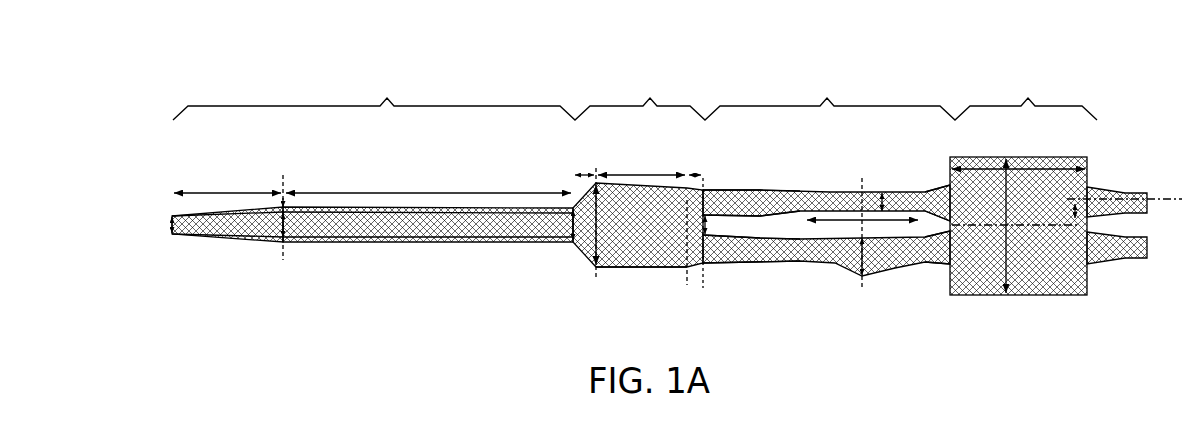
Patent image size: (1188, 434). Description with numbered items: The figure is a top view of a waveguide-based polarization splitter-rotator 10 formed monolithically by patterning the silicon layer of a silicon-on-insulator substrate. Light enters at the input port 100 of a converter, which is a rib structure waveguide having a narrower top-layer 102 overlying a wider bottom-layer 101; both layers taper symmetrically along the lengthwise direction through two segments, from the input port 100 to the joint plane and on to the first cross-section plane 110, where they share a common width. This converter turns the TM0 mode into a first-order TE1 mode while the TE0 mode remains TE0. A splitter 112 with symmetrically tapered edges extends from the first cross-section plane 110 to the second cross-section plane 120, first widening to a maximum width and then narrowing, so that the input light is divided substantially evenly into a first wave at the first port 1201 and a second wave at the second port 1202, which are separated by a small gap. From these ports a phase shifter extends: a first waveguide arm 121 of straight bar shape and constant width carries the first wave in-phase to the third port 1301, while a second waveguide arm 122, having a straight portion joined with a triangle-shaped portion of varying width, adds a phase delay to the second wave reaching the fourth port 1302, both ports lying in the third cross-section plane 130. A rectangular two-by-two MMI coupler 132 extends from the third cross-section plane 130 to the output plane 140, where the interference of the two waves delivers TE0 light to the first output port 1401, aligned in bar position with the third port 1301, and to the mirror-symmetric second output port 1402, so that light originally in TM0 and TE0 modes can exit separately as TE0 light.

The waveguide-based polarization splitter-rotator 10 is at (733, 44).
The input port 100 is at (372, 259).
The bottom-layer 101 is at (308, 244).
The top-layer 102 is at (383, 232).
The first cross-section plane 110 is at (616, 255).
The splitter 112 is at (613, 250).
The second cross-section plane 120 is at (832, 226).
The first port 1201 is at (705, 195).
The second port 1202 is at (708, 247).
The first waveguide arm 121 is at (826, 168).
The second waveguide arm 122 is at (832, 284).
The third port 1301 is at (948, 200).
The fourth port 1302 is at (947, 254).
The third cross-section plane 130 is at (1018, 246).
The 2x2 MMI coupler 132 is at (1027, 263).
The output plane 140 is at (1124, 248).
The first output port 1401 is at (1088, 197).
The second output port 1402 is at (1090, 248).